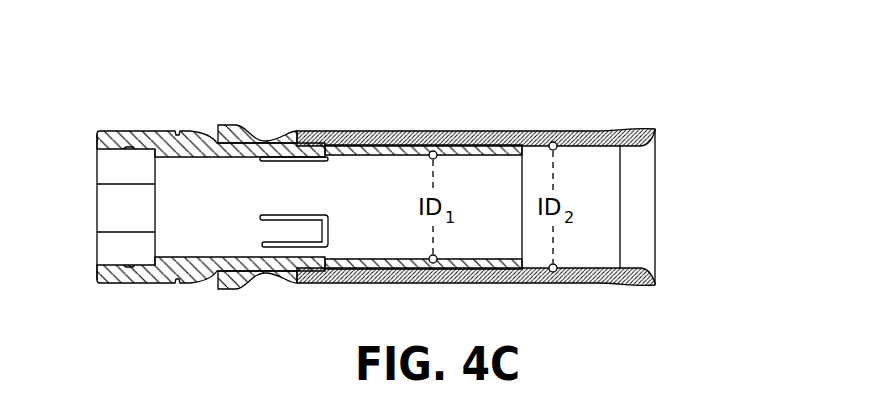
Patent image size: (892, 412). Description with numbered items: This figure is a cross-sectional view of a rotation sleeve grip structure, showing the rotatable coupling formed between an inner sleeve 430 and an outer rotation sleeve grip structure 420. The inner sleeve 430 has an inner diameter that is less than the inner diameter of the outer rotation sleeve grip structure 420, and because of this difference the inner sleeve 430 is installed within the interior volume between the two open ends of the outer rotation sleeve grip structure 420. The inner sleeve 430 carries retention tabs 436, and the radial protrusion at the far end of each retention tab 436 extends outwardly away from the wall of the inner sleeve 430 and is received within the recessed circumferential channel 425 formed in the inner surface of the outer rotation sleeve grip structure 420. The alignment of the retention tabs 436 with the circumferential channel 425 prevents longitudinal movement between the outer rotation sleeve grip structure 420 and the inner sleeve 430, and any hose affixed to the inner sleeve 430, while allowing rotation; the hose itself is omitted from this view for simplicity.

The inner sleeve 430 is at (197, 131).
The retention tab 436 is at (302, 132).
The circumferential channel 425 is at (297, 150).
The outer rotation sleeve grip structure 420 is at (487, 132).